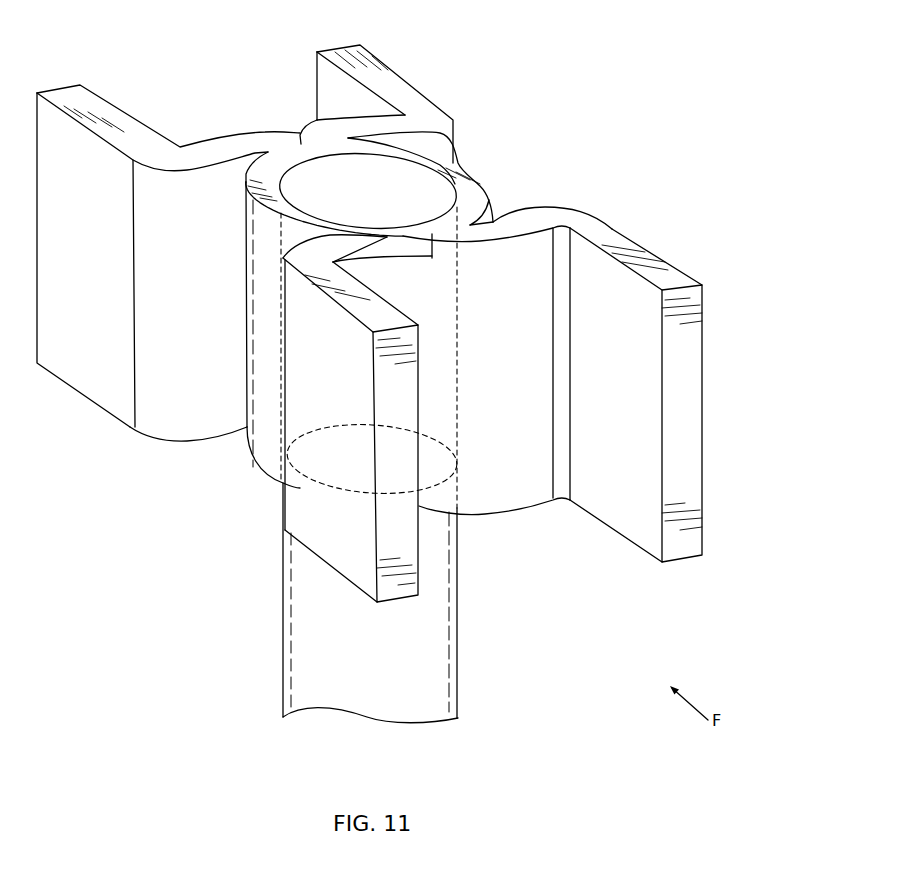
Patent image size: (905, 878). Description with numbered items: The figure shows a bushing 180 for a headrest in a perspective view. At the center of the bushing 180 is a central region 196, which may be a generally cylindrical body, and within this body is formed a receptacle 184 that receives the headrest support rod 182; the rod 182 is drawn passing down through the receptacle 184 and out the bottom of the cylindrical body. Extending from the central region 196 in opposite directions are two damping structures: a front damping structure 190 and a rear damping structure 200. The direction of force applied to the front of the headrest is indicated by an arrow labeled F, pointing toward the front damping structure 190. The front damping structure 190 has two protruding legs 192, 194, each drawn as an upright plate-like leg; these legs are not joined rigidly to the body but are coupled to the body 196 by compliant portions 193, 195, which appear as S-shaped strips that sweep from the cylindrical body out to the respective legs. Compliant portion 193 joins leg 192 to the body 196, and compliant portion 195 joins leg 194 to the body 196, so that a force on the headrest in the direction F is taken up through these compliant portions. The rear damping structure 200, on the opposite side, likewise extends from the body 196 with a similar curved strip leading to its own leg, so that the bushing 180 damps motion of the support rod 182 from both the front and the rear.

The bushing 180 is at (694, 97).
The headrest support rod 182 is at (310, 640).
The receptacle 184 is at (302, 172).
The front damping structure 190 is at (680, 602).
The protruding leg 192 is at (685, 443).
The compliant portion 193 is at (522, 220).
The protruding leg 194 is at (412, 575).
The compliant portion 195 is at (347, 250).
The central region 196 is at (487, 198).
The rear damping structure 200 is at (152, 63).